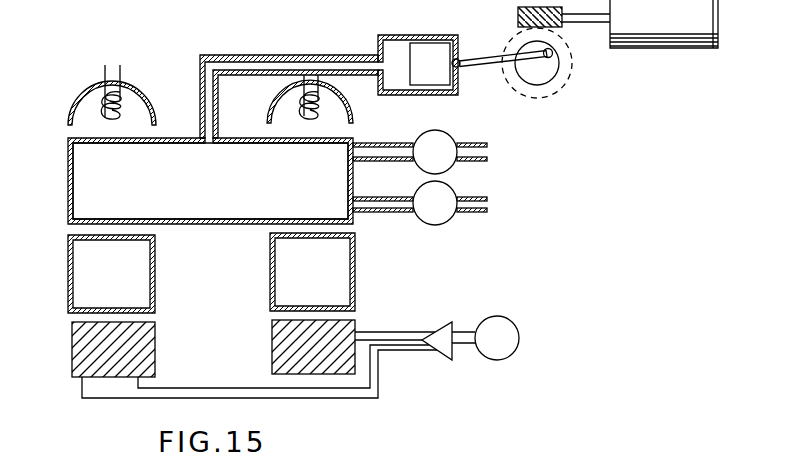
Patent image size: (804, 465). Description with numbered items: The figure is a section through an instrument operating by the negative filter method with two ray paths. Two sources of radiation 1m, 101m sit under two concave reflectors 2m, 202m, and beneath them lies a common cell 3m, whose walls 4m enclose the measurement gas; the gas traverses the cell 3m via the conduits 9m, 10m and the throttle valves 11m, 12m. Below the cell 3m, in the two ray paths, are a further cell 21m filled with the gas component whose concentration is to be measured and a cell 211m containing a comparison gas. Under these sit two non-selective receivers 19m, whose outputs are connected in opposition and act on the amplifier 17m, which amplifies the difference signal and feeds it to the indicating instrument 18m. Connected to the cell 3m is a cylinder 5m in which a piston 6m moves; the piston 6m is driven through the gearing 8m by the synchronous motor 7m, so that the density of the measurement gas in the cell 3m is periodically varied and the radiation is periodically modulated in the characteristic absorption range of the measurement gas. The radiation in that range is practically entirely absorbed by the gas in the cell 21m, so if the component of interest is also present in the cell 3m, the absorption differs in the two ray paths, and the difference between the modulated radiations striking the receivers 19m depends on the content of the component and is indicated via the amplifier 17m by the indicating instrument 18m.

The source of radiation 1m is at (123, 98).
The concave reflector 2m is at (99, 85).
The cell 3m is at (215, 219).
The wall 4m is at (112, 219).
The cylinder 5m is at (391, 37).
The piston 6m is at (431, 50).
The synchronous motor 7m is at (676, 46).
The gearing 8m is at (561, 27).
The conduit 9m is at (472, 143).
The conduit 10m is at (480, 212).
The throttle valve 11m is at (445, 132).
The throttle valve 12m is at (443, 223).
The amplifier 17m is at (437, 330).
The indicating instrument 18m is at (490, 318).
The receiver 19m is at (78, 351).
The cell 21m is at (142, 279).
The source of radiation 101m is at (321, 98).
The concave reflector 202m is at (297, 90).
The cell 211m is at (281, 278).